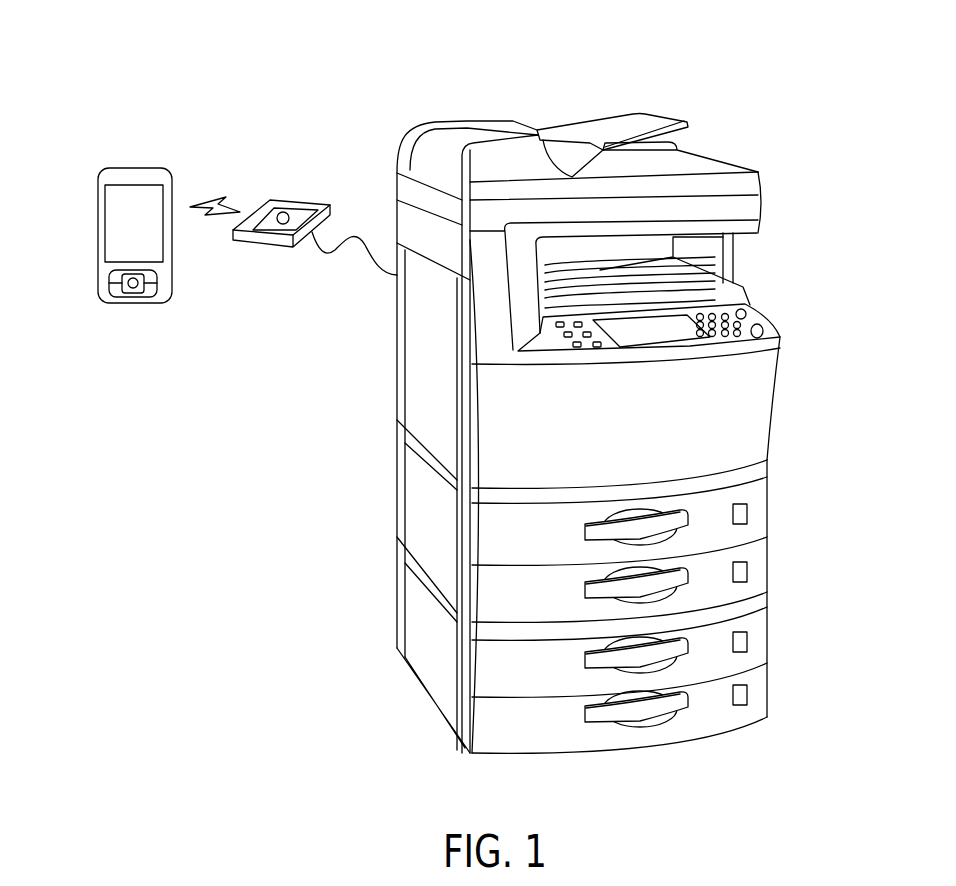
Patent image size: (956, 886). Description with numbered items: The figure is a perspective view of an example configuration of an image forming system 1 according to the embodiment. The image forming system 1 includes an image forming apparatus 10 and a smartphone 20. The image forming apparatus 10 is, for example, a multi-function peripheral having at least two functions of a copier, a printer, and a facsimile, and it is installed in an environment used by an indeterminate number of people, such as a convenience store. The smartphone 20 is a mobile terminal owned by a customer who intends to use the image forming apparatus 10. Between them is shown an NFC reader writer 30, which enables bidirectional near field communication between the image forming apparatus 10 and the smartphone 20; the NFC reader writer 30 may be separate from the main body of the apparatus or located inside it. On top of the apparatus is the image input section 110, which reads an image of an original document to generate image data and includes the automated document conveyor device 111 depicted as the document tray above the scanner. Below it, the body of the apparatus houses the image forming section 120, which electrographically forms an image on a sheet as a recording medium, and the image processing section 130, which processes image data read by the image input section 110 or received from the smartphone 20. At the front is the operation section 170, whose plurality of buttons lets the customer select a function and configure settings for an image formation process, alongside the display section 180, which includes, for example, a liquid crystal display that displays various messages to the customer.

The image forming system 1 is at (215, 87).
The image forming apparatus 10 is at (733, 137).
The smartphone 20 is at (98, 208).
The NFC reader writer 30 is at (302, 200).
The image input section 110 is at (758, 203).
The automated document conveyor device 111 is at (603, 125).
The image forming section 120 is at (762, 412).
The image processing section 130 is at (619, 606).
The operation section 170 is at (777, 328).
The display section 180 is at (648, 334).